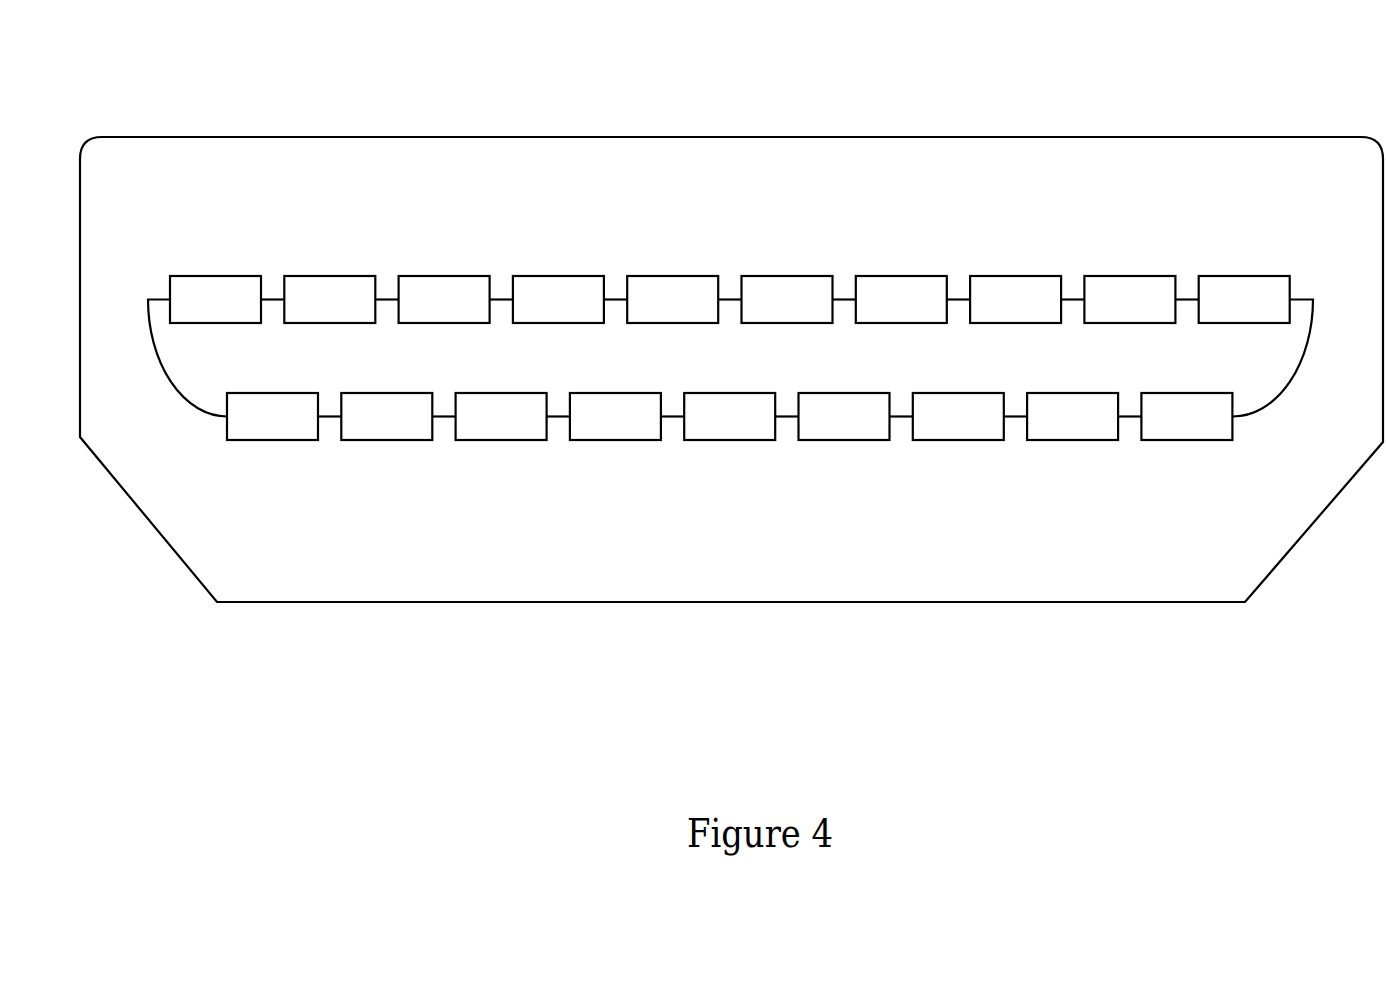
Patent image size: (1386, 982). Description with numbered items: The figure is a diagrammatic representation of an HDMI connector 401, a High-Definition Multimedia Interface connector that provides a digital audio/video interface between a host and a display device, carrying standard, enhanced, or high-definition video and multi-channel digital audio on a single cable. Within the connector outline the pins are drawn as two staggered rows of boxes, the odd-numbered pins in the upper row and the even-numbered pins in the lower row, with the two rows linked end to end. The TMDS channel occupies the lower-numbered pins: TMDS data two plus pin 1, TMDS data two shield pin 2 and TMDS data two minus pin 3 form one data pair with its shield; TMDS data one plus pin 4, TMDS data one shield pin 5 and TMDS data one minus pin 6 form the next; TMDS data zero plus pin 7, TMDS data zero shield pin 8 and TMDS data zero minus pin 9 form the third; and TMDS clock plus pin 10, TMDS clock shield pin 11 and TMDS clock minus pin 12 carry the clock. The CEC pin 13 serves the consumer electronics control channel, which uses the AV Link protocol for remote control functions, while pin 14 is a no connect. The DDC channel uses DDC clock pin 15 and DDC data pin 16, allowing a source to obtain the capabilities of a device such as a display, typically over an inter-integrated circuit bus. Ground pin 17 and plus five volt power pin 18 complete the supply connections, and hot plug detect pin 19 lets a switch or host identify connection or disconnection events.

The HDMI connector 401 is at (925, 137).
The TMDS Data 2+ pin 1 is at (1244, 299).
The TMDS Data 2 Shield pin 2 is at (1186, 416).
The TMDS Data 2− pin 3 is at (1129, 299).
The TMDS Data 1+ pin 4 is at (1072, 416).
The TMDS Data 1 Shield pin 5 is at (1015, 299).
The TMDS Data 1− pin 6 is at (958, 416).
The TMDS Data 0+ pin 7 is at (901, 299).
The TMDS Data 0 Shield pin 8 is at (844, 416).
The TMDS Data 0− pin 9 is at (787, 299).
The TMDS Clock+ pin 10 is at (729, 416).
The TMDS Clock Shield pin 11 is at (672, 299).
The TMDS Clock− pin 12 is at (615, 416).
The CEC pin 13 is at (558, 299).
The No Connect pin 14 is at (501, 416).
The DDC Clock pin 15 is at (444, 299).
The DDC Data pin 16 is at (386, 416).
The Ground pin 17 is at (329, 299).
The +5V Power pin 18 is at (272, 416).
The Hot Plug Detect pin 19 is at (215, 299).